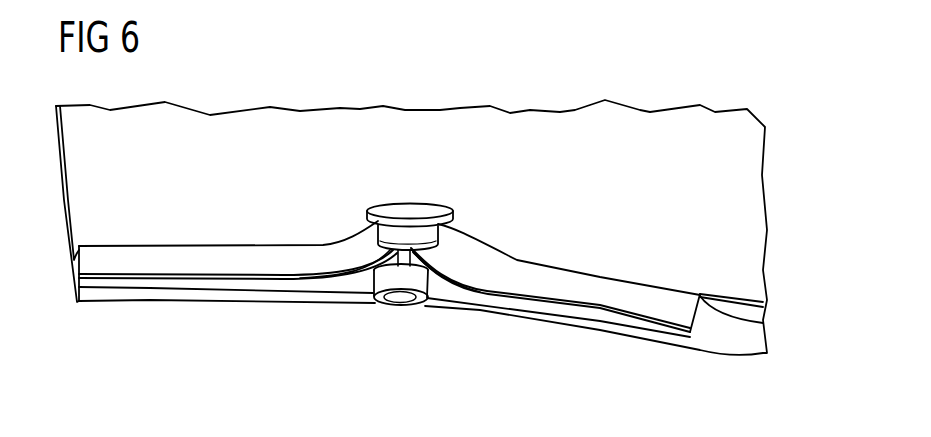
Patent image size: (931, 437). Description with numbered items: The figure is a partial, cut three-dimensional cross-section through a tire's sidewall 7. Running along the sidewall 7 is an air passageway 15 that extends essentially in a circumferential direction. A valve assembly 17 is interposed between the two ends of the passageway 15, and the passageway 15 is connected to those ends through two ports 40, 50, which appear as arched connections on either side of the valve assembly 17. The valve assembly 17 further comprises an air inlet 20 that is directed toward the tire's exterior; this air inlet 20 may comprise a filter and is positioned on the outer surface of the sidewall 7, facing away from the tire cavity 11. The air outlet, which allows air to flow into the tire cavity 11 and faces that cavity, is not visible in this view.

The sidewall 7 is at (95, 205).
The tire cavity 11 is at (593, 193).
The air passageway 15 is at (205, 278).
The valve assembly 17 is at (417, 196).
The air inlet 20 is at (400, 314).
The port 40 is at (380, 255).
The port 50 is at (442, 262).